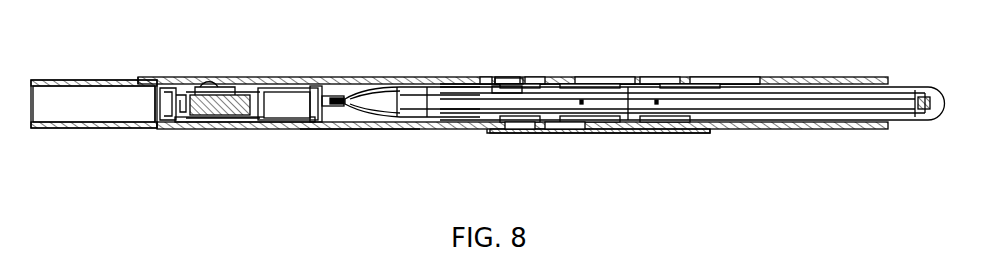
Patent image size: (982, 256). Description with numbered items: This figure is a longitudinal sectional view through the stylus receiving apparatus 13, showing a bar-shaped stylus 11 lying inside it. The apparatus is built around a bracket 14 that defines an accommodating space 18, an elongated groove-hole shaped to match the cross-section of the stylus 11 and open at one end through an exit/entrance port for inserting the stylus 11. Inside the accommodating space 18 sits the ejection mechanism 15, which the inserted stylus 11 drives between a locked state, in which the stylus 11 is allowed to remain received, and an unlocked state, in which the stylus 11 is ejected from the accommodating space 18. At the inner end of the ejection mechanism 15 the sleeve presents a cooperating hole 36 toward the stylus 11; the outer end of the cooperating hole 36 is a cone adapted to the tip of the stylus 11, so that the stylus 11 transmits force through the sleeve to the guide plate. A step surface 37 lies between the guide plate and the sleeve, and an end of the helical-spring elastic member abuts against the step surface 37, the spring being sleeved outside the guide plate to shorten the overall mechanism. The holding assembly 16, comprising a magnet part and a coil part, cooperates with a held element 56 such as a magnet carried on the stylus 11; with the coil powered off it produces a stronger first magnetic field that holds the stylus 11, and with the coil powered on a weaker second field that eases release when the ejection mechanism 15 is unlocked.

The stylus 11 is at (898, 84).
The stylus receiving apparatus 13 is at (768, 74).
The bracket 14 is at (355, 130).
The ejection mechanism 15 is at (254, 119).
The holding assembly 16 is at (515, 132).
The accommodating space 18 is at (367, 86).
The cooperating hole 36 is at (303, 98).
The step surface 37 is at (238, 84).
The held element 56 is at (513, 91).